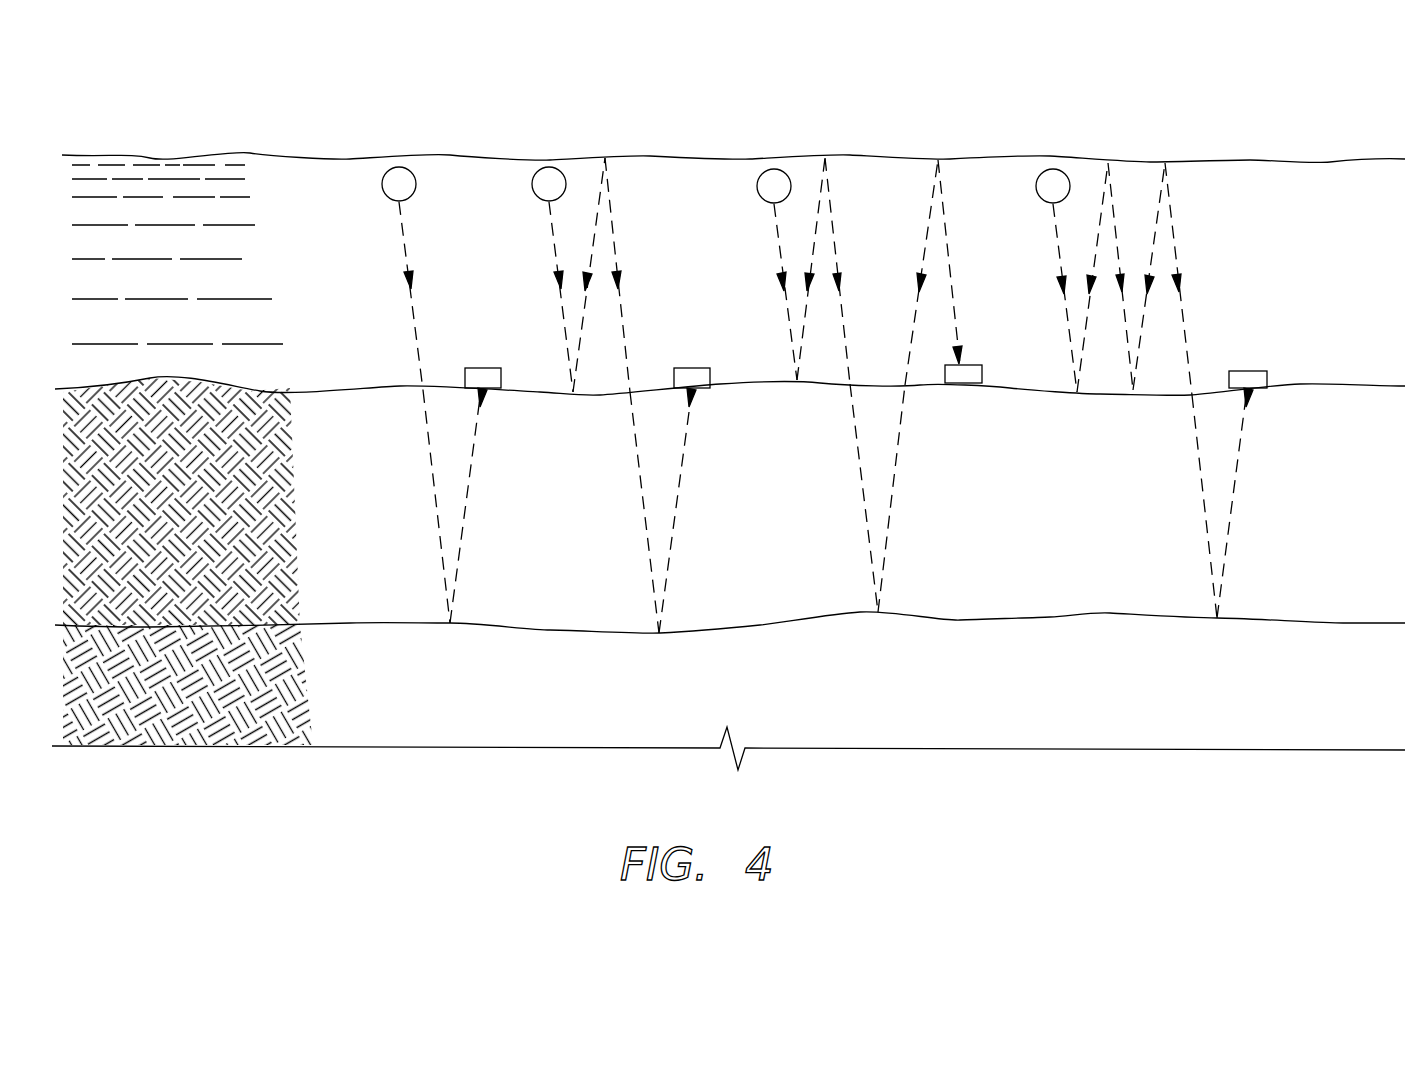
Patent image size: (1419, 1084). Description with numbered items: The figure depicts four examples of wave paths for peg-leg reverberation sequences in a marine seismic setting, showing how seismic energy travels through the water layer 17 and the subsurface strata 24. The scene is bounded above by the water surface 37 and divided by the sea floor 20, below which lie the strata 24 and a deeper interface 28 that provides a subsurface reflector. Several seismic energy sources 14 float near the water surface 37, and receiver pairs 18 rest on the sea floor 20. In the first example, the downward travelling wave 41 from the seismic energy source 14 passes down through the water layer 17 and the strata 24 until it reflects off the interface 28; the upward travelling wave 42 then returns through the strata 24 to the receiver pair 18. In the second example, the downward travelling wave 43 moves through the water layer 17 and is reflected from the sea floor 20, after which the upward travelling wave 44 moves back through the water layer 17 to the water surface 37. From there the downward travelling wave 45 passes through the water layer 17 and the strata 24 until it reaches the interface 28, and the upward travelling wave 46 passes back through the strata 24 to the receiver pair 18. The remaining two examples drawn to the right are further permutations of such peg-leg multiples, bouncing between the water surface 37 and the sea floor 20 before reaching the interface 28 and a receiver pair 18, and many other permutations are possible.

The seismic energy source 14 is at (381, 184).
The water layer 17 is at (1360, 263).
The receiver pair 18 is at (490, 367).
The sea floor 20 is at (1340, 383).
The strata 24 is at (1358, 518).
The interface 28 is at (1340, 622).
The water surface 37 is at (1290, 163).
The downward travelling wave 41 is at (431, 462).
The upward travelling wave 42 is at (473, 465).
The downward travelling wave 43 is at (553, 266).
The upward travelling wave 44 is at (594, 243).
The downward travelling wave 45 is at (638, 462).
The upward travelling wave 46 is at (685, 465).